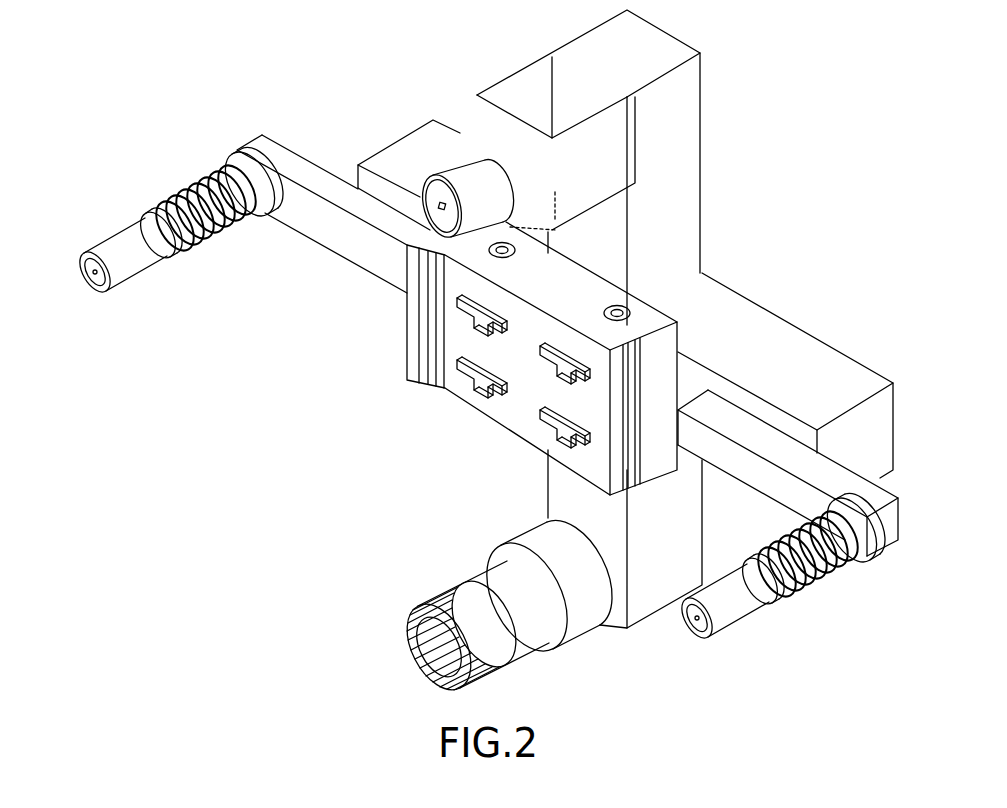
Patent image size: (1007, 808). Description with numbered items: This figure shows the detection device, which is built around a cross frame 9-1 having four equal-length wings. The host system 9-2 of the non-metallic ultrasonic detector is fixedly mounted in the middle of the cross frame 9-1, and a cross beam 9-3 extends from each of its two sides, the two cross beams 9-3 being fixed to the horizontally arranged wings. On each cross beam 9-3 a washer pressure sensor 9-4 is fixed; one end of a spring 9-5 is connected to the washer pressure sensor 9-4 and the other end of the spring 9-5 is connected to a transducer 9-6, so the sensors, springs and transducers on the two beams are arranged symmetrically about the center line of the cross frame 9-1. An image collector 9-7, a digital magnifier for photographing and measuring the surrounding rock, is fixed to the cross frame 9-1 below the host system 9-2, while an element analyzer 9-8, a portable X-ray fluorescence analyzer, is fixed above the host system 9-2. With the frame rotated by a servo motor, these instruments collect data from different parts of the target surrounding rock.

The cross frame 9-1 is at (703, 293).
The host system 9-2 is at (462, 366).
The cross beam 9-3 is at (289, 153).
The washer pressure sensor 9-4 is at (237, 152).
The spring 9-5 is at (180, 193).
The transducer 9-6 is at (115, 245).
The image collector 9-7 is at (488, 570).
The element analyzer 9-8 is at (480, 112).